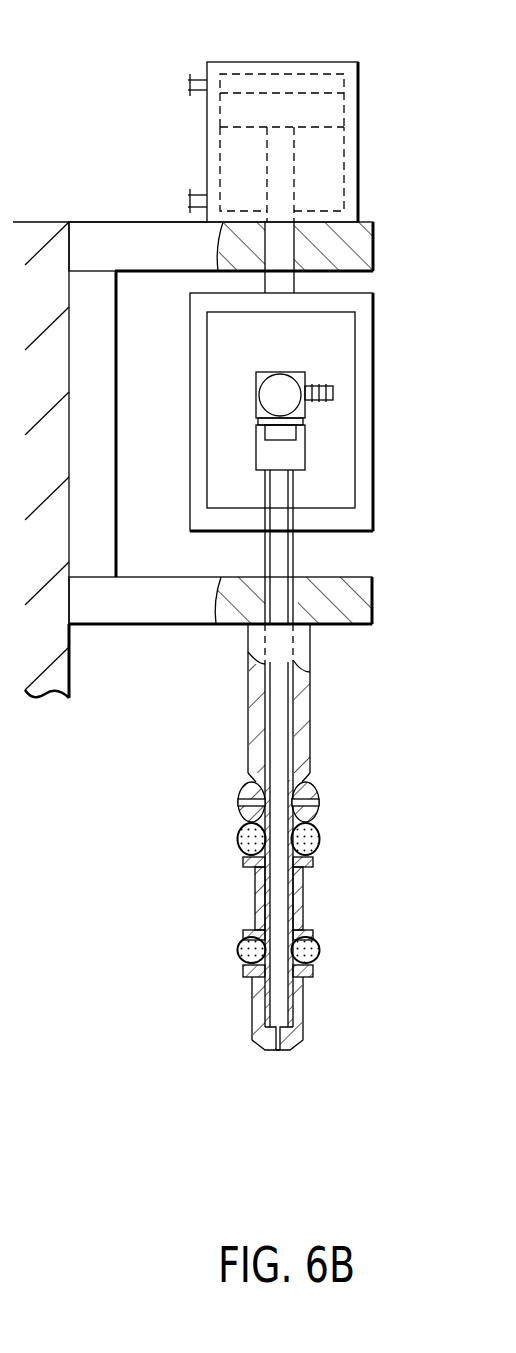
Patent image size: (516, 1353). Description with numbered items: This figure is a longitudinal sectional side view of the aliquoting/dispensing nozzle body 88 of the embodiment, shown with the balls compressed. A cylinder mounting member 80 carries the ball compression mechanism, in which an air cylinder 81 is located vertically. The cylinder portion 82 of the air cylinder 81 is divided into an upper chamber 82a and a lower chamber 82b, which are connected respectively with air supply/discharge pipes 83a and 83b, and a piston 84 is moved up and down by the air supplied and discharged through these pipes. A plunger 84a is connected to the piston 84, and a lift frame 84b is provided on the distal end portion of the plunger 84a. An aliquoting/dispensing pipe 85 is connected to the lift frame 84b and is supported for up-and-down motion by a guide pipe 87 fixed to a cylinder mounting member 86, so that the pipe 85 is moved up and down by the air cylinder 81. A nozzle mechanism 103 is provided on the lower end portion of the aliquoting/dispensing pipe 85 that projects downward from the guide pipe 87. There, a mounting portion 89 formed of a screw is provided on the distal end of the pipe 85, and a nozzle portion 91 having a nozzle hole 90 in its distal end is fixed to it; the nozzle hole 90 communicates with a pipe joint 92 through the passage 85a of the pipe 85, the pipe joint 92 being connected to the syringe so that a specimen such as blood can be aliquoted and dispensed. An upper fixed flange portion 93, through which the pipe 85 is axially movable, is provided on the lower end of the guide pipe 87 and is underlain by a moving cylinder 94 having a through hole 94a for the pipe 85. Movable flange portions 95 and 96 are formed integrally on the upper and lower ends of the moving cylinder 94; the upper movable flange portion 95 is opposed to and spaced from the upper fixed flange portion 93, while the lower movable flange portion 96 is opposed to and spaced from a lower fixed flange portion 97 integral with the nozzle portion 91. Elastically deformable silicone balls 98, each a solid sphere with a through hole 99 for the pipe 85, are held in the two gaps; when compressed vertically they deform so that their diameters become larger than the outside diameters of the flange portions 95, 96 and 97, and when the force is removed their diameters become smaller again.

The cylinder mounting member 80 is at (102, 222).
The air cylinder 81 is at (300, 117).
The cylinder portion 82 is at (358, 70).
The upper chamber 82a is at (281, 87).
The lower chamber 82b is at (328, 180).
The air supply/discharge pipe 83a is at (190, 78).
The air supply/discharge pipe 83b is at (190, 195).
The piston 84 is at (317, 120).
The plunger 84a is at (285, 243).
The lift frame 84b is at (373, 333).
The aliquoting/dispensing pipe 85 is at (292, 487).
The passage 85a is at (280, 707).
The cylinder mounting member 86 is at (372, 600).
The guide pipe 87 is at (310, 648).
The nozzle body 88 is at (248, 716).
The mounting portion 89 is at (262, 1000).
The nozzle hole 90 is at (278, 1052).
The nozzle portion 91 is at (303, 1015).
The pipe joint 92 is at (290, 383).
The upper fixed flange portion 93 is at (310, 786).
The moving cylinder 94 is at (277, 900).
The through hole 94a is at (258, 902).
The upper movable flange portion 95 is at (313, 861).
The lower movable flange portion 96 is at (313, 931).
The lower fixed flange portion 97 is at (313, 970).
The silicone ball 98 is at (238, 843).
The through hole 99 is at (305, 826).
The nozzle mechanism 103 is at (255, 940).